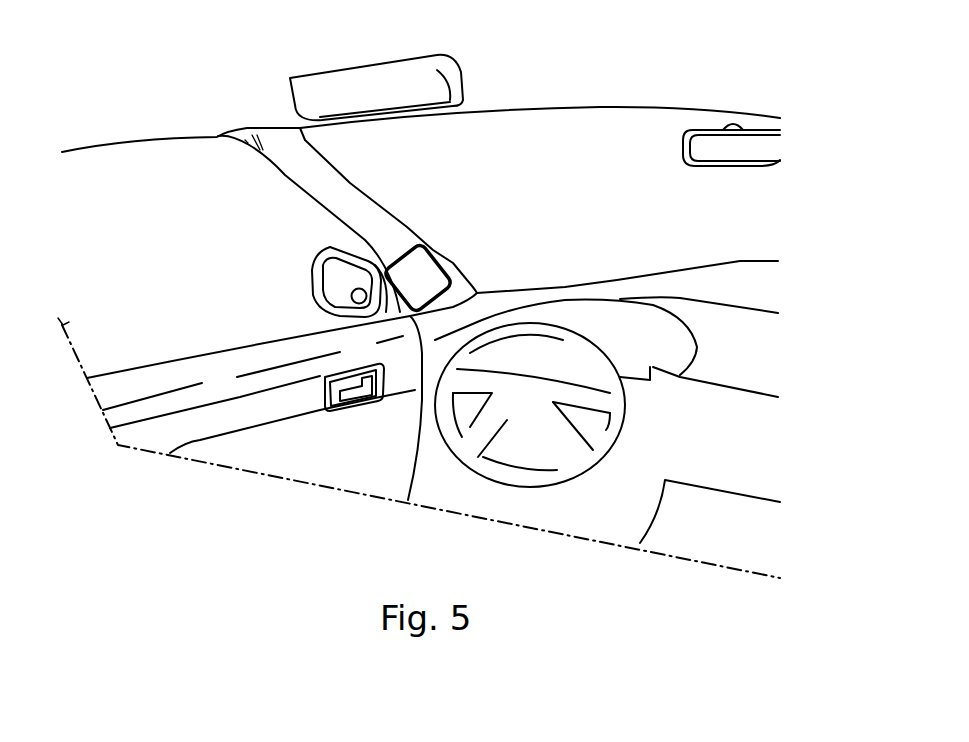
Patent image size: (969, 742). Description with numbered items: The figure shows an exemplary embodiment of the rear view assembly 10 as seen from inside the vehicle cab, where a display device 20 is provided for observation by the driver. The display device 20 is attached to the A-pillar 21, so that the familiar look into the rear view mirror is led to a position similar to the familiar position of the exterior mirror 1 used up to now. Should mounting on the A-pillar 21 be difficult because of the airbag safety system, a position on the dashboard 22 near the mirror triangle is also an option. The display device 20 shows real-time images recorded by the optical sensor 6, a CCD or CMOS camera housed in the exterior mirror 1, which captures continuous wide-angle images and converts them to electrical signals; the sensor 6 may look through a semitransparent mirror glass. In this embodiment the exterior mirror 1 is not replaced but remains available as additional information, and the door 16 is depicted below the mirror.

The exterior mirror 1 is at (315, 267).
The optical sensor 6 is at (352, 297).
The rear view assembly 10 is at (486, 251).
The vehicle door 16 is at (399, 464).
The display device 20 is at (427, 262).
The A-pillar 21 is at (272, 147).
The dashboard 22 is at (503, 296).